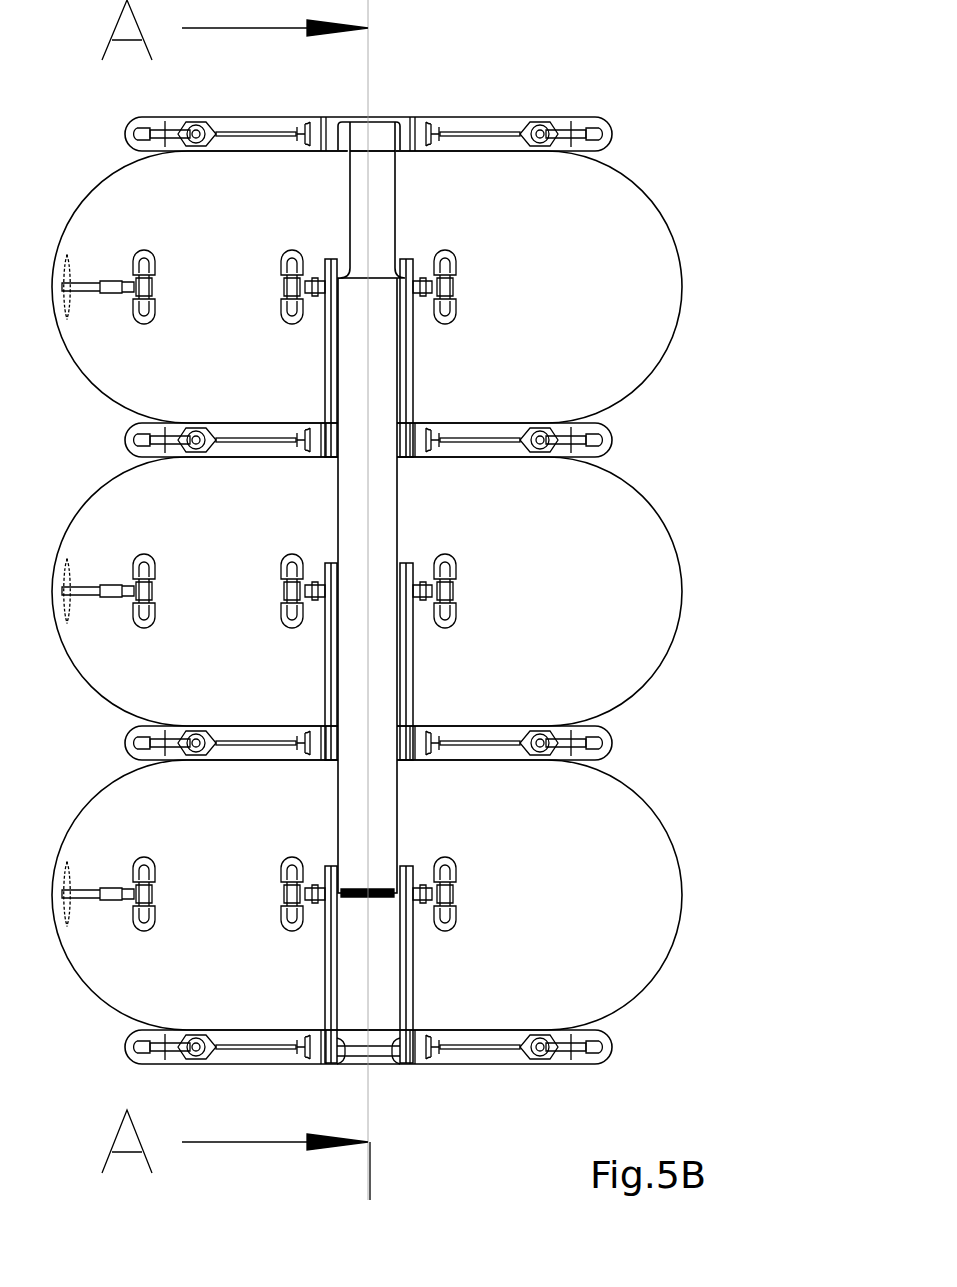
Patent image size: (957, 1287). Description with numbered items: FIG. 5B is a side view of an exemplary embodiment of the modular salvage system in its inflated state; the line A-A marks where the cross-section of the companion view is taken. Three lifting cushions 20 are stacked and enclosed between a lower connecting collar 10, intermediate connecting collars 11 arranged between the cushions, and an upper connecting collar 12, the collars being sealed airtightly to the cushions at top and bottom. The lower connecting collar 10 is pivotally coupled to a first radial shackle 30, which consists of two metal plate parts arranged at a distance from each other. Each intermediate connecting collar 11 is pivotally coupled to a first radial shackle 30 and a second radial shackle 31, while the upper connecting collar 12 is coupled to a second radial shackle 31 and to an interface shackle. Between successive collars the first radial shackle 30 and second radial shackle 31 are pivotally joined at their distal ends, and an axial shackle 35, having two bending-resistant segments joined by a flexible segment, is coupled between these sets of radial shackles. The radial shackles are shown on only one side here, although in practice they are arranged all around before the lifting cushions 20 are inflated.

The lower connecting collar 10 is at (610, 1052).
The connecting collar 11 is at (610, 440).
The upper connecting collar 12 is at (600, 136).
The lifting cushion 20 is at (647, 278).
The first radial shackle 30 is at (323, 378).
The second radial shackle 31 is at (357, 213).
The axial shackle 35 is at (370, 492).